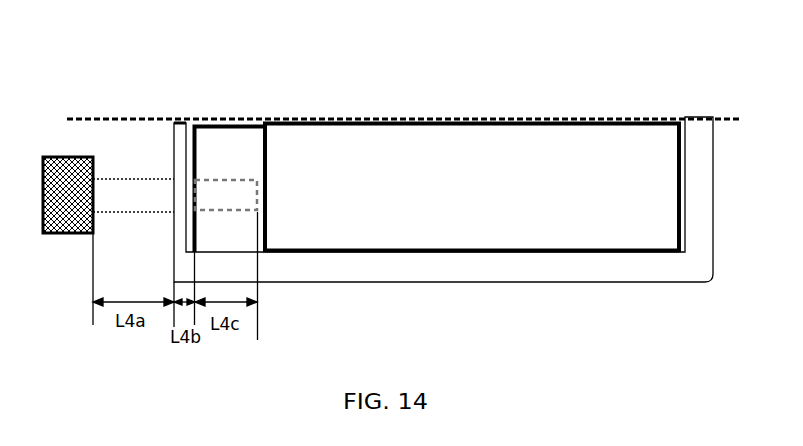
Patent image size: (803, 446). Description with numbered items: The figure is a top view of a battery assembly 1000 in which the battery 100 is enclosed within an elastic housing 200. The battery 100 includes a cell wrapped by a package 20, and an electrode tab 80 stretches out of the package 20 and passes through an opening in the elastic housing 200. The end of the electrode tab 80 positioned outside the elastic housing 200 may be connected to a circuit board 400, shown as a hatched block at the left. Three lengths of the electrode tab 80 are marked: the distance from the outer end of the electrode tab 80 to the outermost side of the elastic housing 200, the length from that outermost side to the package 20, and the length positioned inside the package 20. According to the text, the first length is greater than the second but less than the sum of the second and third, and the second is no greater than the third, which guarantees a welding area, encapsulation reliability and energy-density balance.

The smoking article assembly 1000 is at (115, 52).
The electrode tab 80 is at (143, 183).
The package 20 is at (197, 153).
The battery 100 is at (300, 142).
The elastic housing 200 is at (338, 272).
The circuit board 400 is at (65, 238).